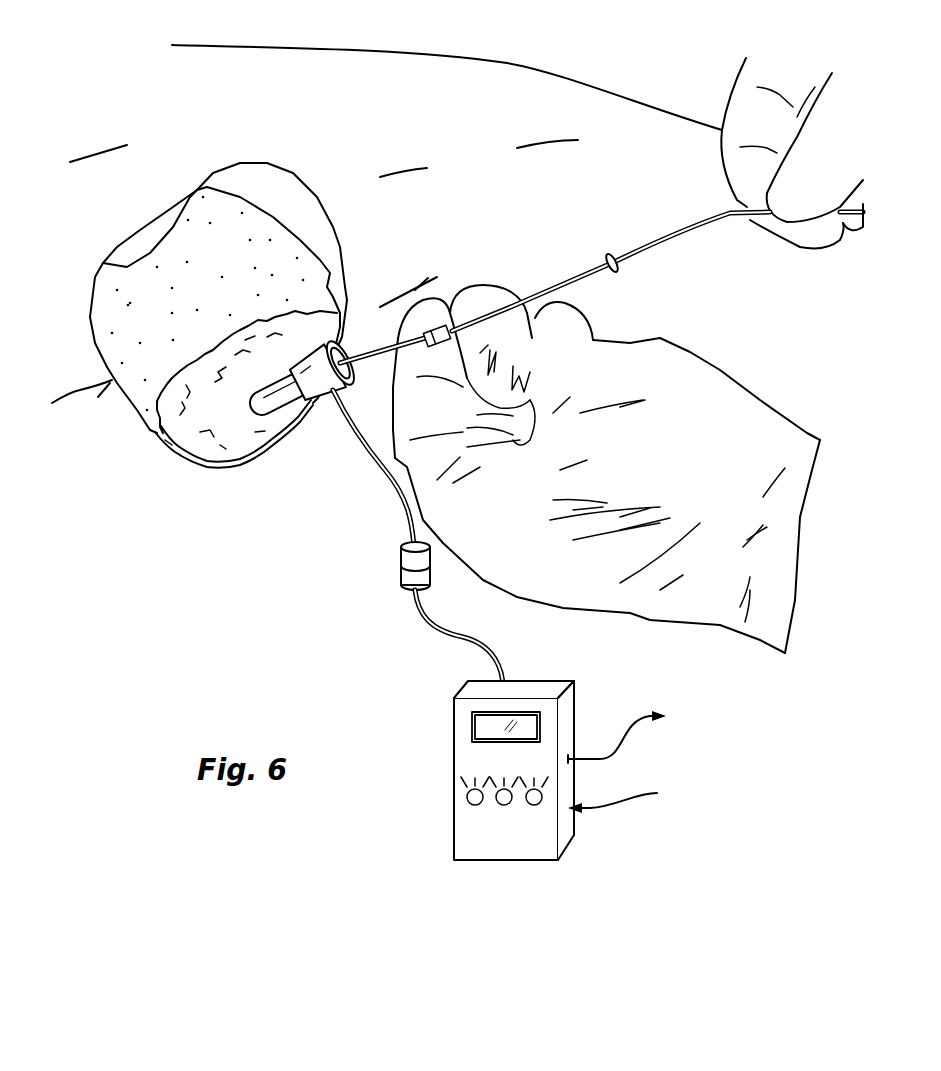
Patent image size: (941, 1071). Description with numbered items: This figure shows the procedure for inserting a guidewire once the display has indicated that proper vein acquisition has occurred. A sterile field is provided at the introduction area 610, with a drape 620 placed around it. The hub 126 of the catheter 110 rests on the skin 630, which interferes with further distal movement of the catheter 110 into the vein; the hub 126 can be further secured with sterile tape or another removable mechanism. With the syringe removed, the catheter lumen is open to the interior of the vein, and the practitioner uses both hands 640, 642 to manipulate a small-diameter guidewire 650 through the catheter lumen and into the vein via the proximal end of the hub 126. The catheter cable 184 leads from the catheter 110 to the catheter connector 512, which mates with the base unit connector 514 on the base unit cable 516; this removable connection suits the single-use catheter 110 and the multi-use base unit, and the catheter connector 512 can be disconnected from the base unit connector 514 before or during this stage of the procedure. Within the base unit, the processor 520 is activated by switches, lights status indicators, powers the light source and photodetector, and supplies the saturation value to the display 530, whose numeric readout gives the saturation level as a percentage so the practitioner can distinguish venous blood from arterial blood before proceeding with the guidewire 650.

The catheter 110 is at (275, 425).
The hub 126 is at (308, 403).
The catheter cable 184 is at (392, 470).
The catheter connector 512 is at (397, 556).
The base unit connector 514 is at (408, 590).
The base unit cable 516 is at (483, 640).
The processor 520 is at (462, 762).
The display 530 is at (472, 729).
The introduction area 610 is at (186, 457).
The drape 620 is at (307, 165).
The skin 630 is at (222, 443).
The hand 640 is at (722, 385).
The hand 642 is at (832, 138).
The guidewire 650 is at (662, 230).